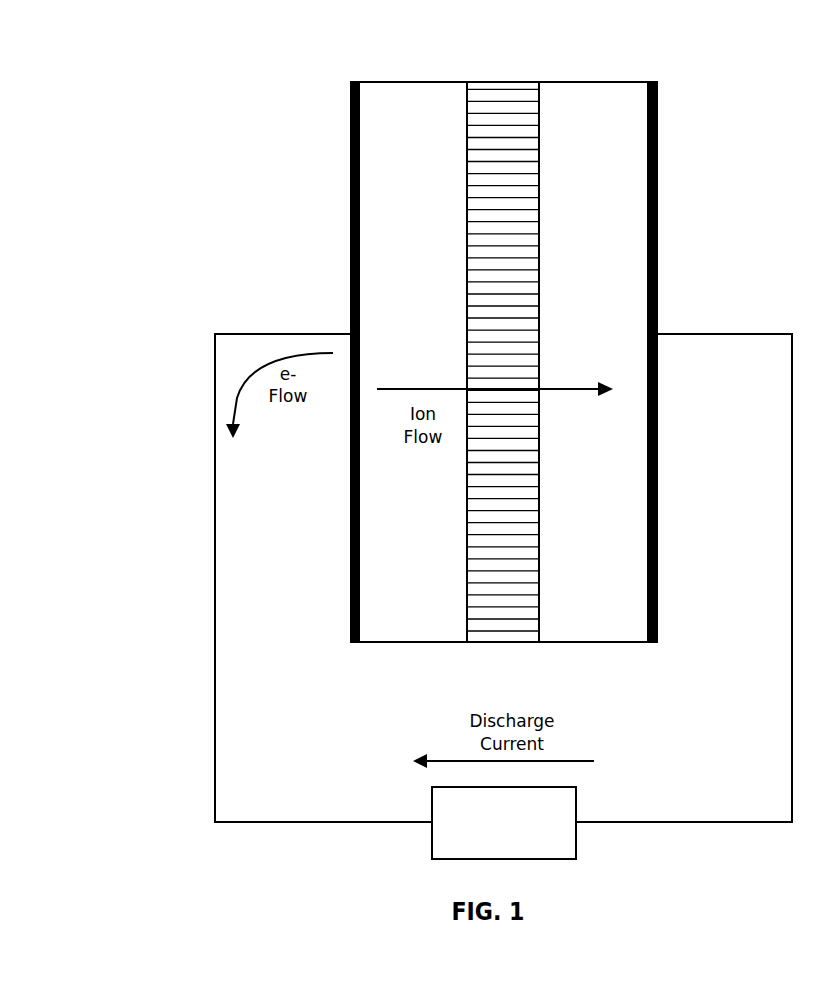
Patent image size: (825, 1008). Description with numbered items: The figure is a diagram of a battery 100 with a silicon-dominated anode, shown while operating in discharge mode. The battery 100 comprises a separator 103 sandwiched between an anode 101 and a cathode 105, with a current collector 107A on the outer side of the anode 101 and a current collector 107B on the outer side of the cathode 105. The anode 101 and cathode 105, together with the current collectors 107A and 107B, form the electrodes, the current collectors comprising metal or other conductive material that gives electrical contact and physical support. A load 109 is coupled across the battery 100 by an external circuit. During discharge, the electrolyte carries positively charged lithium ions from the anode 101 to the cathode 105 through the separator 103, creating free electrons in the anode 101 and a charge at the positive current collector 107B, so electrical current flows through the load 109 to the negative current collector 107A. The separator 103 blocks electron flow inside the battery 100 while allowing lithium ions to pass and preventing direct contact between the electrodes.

The battery 100 is at (128, 103).
The anode 101 is at (394, 296).
The separator 103 is at (505, 82).
The cathode 105 is at (574, 296).
The negative current collector 107A is at (349, 110).
The positive current collector 107B is at (658, 108).
The load 109 is at (484, 847).